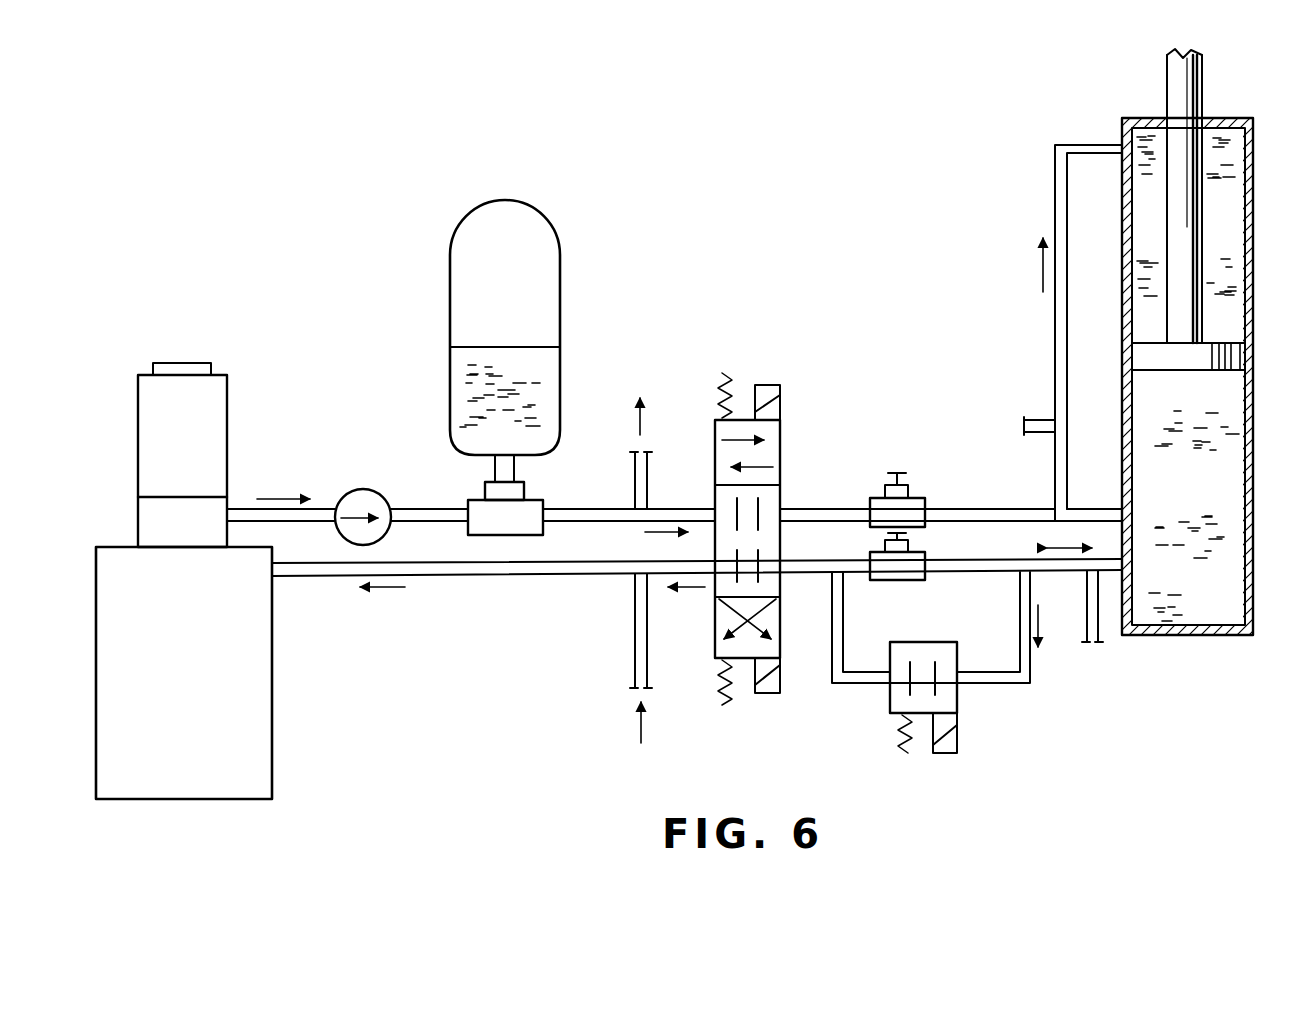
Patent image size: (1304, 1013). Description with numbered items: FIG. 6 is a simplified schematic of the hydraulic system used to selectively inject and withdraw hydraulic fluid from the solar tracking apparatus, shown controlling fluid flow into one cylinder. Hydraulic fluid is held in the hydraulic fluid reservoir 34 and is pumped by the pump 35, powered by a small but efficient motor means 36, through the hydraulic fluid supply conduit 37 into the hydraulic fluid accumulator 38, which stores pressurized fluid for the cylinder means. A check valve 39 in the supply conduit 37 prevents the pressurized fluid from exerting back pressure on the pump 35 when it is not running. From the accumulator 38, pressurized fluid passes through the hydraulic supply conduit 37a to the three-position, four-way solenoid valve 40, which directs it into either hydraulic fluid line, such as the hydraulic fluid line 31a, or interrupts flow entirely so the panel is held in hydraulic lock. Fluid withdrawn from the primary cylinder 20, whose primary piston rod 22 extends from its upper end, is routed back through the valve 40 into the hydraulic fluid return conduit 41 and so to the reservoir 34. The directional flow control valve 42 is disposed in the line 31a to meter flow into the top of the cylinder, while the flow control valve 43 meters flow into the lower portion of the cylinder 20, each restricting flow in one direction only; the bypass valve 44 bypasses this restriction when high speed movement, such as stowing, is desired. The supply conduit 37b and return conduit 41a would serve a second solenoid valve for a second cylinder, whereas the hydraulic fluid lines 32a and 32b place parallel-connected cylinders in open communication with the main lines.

The primary cylinder 20 is at (1253, 428).
The primary piston rod 22 is at (1203, 85).
The hydraulic fluid line 31a is at (993, 508).
The hydraulic fluid line 32a is at (1098, 628).
The hydraulic fluid line 32b is at (1027, 420).
The hydraulic fluid reservoir 34 is at (96, 590).
The pump 35 is at (138, 512).
The motor means 36 is at (138, 431).
The hydraulic fluid supply conduit 37 is at (274, 511).
The hydraulic supply conduit 37a is at (570, 509).
The supply conduit 37b is at (650, 467).
The hydraulic fluid accumulator 38 is at (450, 262).
The check valve 39 is at (366, 490).
The three-position, four-way solenoid valve 40 is at (788, 440).
The hydraulic fluid return conduit 41 is at (687, 590).
The return conduit 41a is at (633, 610).
The directional flow control valve 42 is at (912, 497).
The flow control valve 43 is at (915, 580).
The bypass valve 44 is at (890, 702).